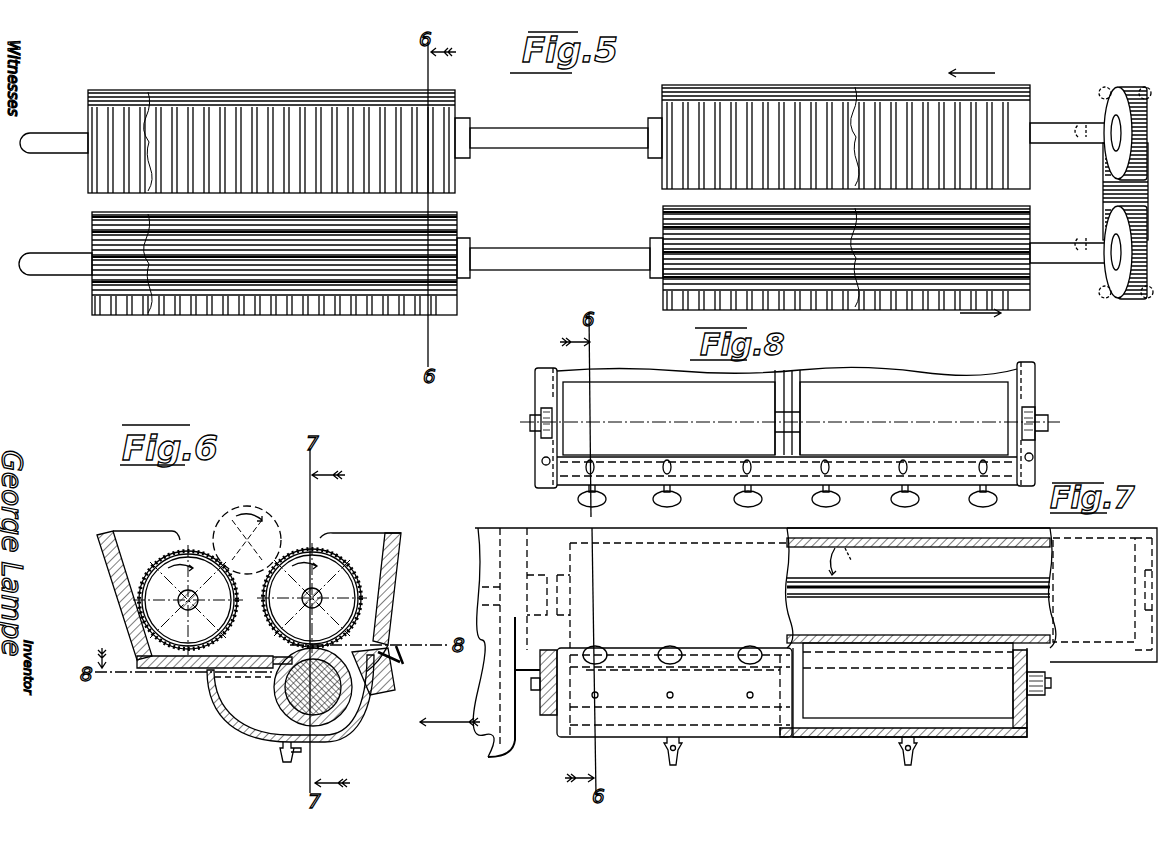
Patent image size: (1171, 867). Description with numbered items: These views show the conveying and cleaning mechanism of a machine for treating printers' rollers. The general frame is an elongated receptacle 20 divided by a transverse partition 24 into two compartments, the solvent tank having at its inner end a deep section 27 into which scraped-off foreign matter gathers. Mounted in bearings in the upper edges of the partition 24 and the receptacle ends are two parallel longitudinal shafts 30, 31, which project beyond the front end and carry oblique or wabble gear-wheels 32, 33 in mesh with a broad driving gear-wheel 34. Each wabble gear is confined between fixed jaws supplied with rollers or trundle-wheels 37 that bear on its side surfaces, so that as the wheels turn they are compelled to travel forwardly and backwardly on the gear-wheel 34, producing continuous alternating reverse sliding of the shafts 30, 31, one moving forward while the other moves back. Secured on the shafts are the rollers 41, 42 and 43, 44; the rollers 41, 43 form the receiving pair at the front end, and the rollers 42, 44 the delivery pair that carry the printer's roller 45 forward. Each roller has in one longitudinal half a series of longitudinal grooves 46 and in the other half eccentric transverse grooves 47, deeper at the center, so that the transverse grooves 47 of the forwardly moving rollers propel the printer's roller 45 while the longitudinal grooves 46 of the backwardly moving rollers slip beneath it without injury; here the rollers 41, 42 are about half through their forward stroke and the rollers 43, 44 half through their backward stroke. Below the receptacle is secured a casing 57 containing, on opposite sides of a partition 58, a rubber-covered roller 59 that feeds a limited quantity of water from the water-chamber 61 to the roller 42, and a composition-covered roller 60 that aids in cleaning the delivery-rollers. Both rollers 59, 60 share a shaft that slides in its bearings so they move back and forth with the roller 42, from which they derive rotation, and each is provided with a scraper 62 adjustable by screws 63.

In FIG. 6, the receptacle 20 is at (372, 528).
In FIG. 7, the receptacle 20 is at (1080, 660).
In FIG. 7, the transverse partition 24 is at (490, 548).
In FIG. 7, the deep section 27 is at (515, 750).
In FIG. 5, the longitudinal shaft 30 is at (555, 138).
In FIG. 6, the longitudinal shaft 30 is at (312, 598).
In FIG. 7, the longitudinal shaft 30 is at (985, 592).
In FIG. 5, the longitudinal shaft 31 is at (538, 255).
In FIG. 6, the longitudinal shaft 31 is at (188, 600).
In FIG. 5, the oblique or wabble gear-wheel 32 is at (1120, 87).
In FIG. 5, the oblique or wabble gear-wheel 33 is at (1120, 305).
In FIG. 5, the broad driving gear-wheel 34 is at (1103, 203).
In FIG. 5, the rollers or trundle-wheels 37 is at (1143, 86).
In FIG. 5, the receiving-roller 41 is at (879, 124).
In FIG. 5, the delivery-roller 42 is at (245, 126).
In FIG. 6, the delivery-roller 42 is at (385, 565).
In FIG. 7, the delivery-roller 42 is at (570, 556).
In FIG. 5, the receiving-roller 43 is at (880, 269).
In FIG. 5, the delivery-roller 44 is at (244, 277).
In FIG. 6, the delivery-roller 44 is at (140, 580).
In FIG. 6, the printer's roller 45 is at (235, 512).
In FIG. 5, the longitudinal grooves 46 is at (395, 88).
In FIG. 6, the longitudinal grooves 46 is at (180, 548).
In FIG. 5, the transverse or circumferential grooves 47 is at (165, 190).
In FIG. 6, the transverse or circumferential grooves 47 is at (287, 545).
In FIG. 6, the casing 57 is at (240, 730).
In FIG. 8, the casing 57 is at (897, 373).
In FIG. 7, the casing 57 is at (1027, 722).
In FIG. 6, the partition 58 is at (245, 697).
In FIG. 8, the partition 58 is at (792, 383).
In FIG. 7, the partition 58 is at (800, 735).
In FIG. 8, the rubber-covered roller 59 is at (904, 418).
In FIG. 7, the rubber-covered roller 59 is at (908, 680).
In FIG. 6, the cleaning roller 60 is at (340, 720).
In FIG. 8, the cleaning roller 60 is at (669, 418).
In FIG. 7, the cleaning roller 60 is at (720, 720).
In FIG. 7, the water-chamber 61 is at (893, 722).
In FIG. 6, the scraper 62 is at (355, 690).
In FIG. 8, the scraper 62 is at (615, 465).
In FIG. 6, the screws 63 is at (393, 657).
In FIG. 8, the screws 63 is at (737, 500).